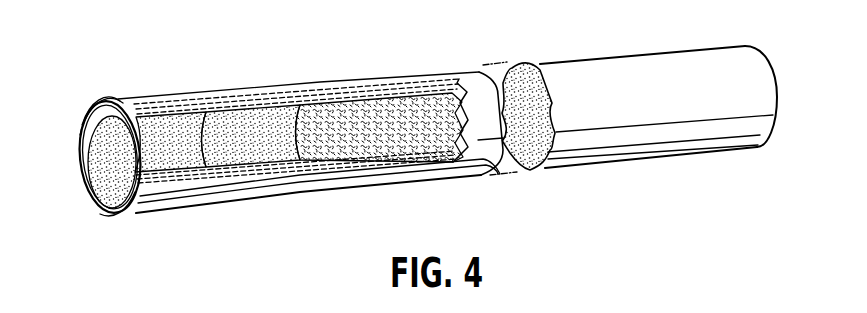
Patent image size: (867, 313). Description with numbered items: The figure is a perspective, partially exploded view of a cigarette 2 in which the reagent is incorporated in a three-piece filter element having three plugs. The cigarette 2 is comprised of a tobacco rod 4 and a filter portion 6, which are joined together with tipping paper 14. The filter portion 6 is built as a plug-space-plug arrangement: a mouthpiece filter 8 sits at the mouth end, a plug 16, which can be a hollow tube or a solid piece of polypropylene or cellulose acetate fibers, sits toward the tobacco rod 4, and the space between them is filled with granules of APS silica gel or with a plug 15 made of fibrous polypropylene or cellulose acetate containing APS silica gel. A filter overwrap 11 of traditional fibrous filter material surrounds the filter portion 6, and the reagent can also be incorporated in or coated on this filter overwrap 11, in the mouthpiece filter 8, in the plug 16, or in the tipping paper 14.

The cigarette 2 is at (297, 55).
The tobacco rod 4 is at (631, 62).
The filter portion 6 is at (180, 80).
The mouthpiece filter 8 is at (86, 110).
The filter overwrap 11 is at (104, 210).
The tipping paper 14 is at (358, 85).
The plug 15 is at (224, 155).
The plug 16 is at (339, 156).